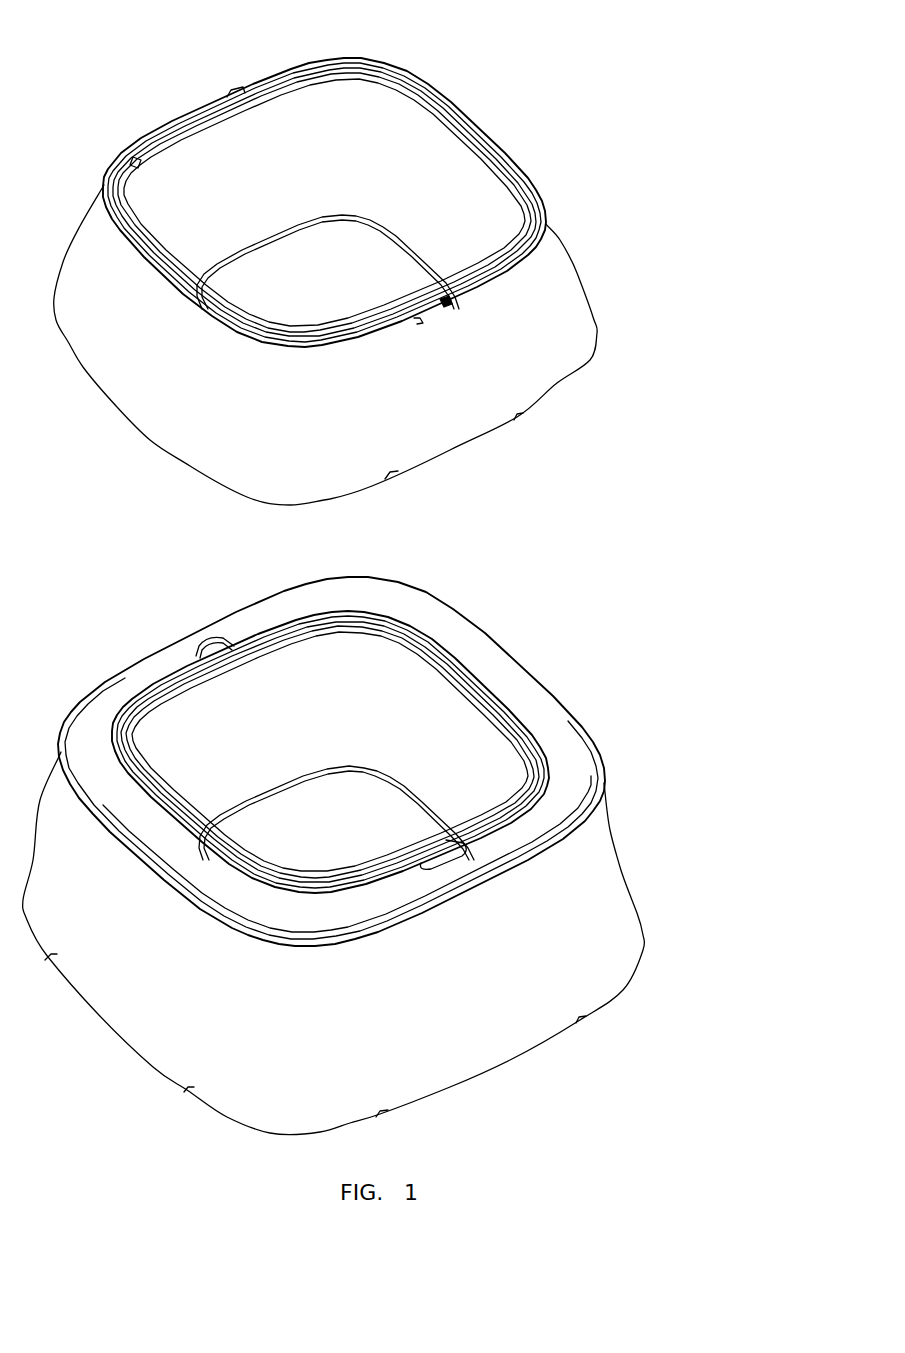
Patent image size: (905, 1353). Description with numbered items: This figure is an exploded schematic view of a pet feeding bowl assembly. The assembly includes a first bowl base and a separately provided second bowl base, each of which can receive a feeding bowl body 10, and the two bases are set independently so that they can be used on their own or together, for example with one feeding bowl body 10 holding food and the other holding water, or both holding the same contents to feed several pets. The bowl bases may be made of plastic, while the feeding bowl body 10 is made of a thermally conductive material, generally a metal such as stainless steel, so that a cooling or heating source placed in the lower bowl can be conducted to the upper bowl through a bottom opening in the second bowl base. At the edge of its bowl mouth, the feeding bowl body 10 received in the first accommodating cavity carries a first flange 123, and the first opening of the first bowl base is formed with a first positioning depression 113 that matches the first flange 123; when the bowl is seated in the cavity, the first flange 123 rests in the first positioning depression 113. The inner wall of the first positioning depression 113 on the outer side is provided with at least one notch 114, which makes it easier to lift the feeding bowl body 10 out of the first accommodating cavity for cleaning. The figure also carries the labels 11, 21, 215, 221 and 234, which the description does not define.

The feeding bowl body 10 is at (443, 177).
The bowl body 11 is at (553, 313).
The first positioning depression 113 is at (535, 188).
The notch 114 is at (232, 92).
The first flange 123 is at (480, 128).
The base housing 21 is at (567, 890).
The receiving opening 215 is at (402, 623).
The sealing ring 221 is at (446, 644).
The locking protrusion 234 is at (200, 652).